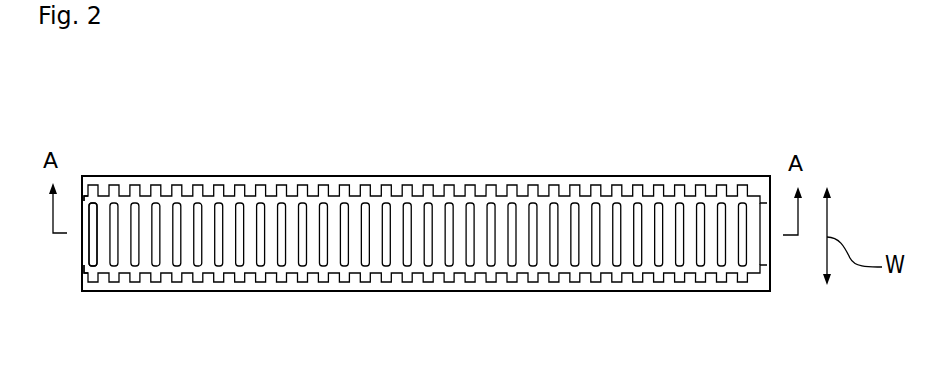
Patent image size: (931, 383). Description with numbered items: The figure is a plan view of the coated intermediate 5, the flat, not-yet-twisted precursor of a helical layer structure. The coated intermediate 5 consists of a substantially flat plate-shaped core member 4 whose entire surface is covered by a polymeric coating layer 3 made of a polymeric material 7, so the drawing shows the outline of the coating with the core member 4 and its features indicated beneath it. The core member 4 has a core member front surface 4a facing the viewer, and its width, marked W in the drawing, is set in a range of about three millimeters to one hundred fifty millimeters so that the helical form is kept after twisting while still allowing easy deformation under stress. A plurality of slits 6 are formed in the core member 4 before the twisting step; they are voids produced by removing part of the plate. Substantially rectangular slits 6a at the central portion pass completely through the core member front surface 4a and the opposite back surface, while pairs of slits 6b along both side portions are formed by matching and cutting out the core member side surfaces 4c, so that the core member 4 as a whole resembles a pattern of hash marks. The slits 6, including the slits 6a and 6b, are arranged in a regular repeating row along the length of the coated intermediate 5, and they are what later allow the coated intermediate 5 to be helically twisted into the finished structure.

The polymeric coating layer 3 is at (417, 291).
The polymeric material 7 is at (426, 275).
The coated intermediate 5 is at (249, 120).
The core member 4 is at (395, 188).
The core member front surface 4a is at (585, 200).
The core member side surface 4c is at (542, 279).
The slits 6 is at (291, 240).
The slits at central portion 6a is at (224, 253).
The pairs of slits in side portions 6b is at (488, 186).